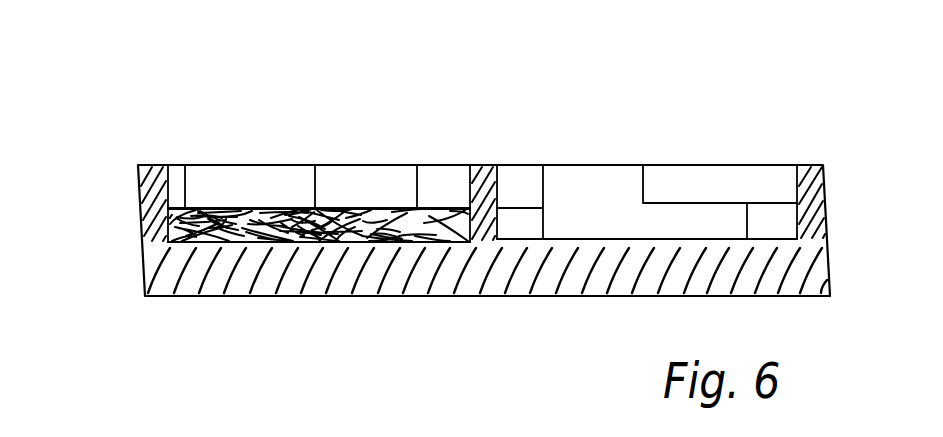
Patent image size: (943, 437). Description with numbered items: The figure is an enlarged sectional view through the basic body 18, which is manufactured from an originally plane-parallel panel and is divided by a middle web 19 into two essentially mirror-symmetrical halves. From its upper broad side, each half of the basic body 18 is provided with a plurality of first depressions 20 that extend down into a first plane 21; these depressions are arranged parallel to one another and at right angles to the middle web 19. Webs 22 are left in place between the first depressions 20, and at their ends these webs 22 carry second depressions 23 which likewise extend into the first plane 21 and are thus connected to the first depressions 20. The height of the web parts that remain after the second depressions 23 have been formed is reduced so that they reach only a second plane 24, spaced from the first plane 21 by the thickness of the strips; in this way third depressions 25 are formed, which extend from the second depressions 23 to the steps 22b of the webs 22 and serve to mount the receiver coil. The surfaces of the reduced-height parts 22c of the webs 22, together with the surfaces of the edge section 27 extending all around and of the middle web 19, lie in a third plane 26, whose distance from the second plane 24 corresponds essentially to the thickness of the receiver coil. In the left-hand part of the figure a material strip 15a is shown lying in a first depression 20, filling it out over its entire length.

The third plane 26 is at (145, 163).
The edge section 27 is at (150, 218).
The basic body 18 is at (458, 300).
The first depressions 20 is at (698, 221).
The middle web 19 is at (480, 183).
The webs 22 is at (360, 163).
The third depressions 25 is at (255, 188).
The steps of the webs 22b is at (310, 183).
The parts of the webs 22c is at (380, 182).
The second depressions 23 is at (187, 220).
The material strip 15a is at (253, 223).
The second plane 24 is at (682, 201).
The first plane 21 is at (763, 232).